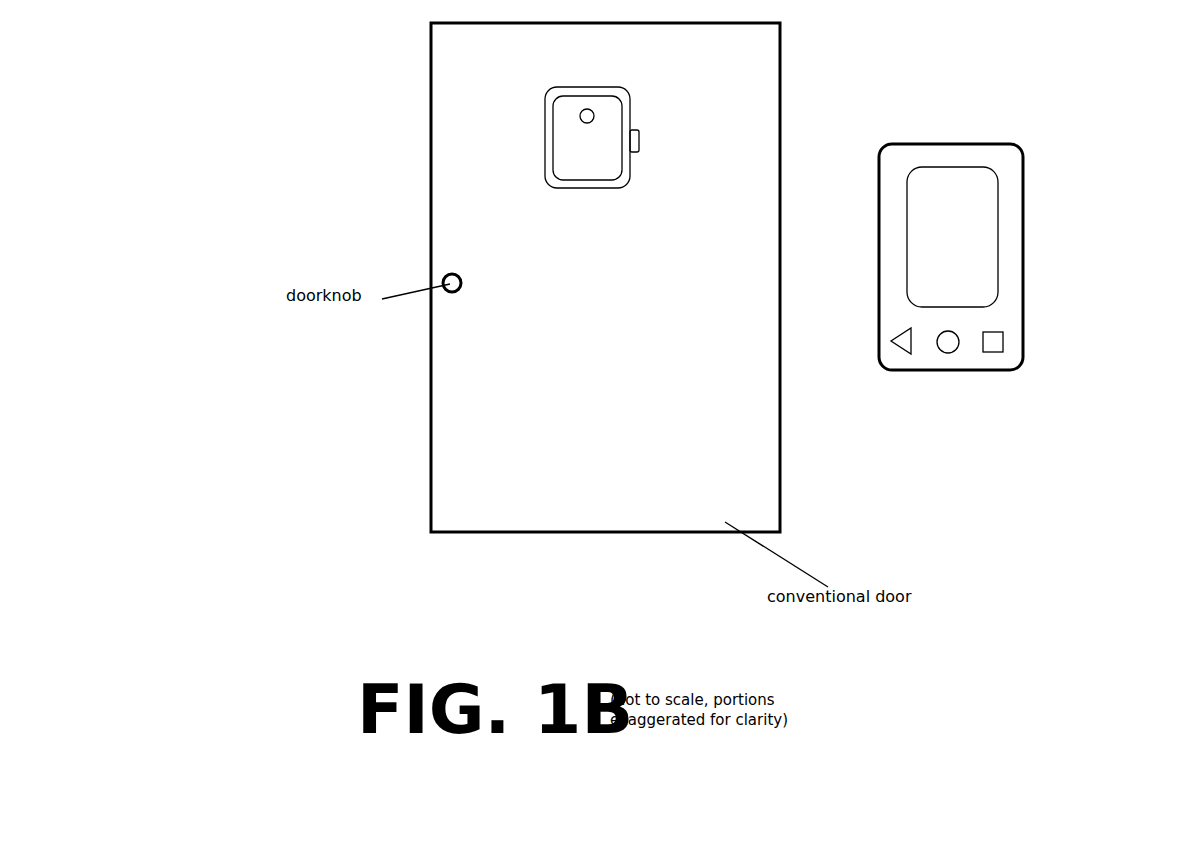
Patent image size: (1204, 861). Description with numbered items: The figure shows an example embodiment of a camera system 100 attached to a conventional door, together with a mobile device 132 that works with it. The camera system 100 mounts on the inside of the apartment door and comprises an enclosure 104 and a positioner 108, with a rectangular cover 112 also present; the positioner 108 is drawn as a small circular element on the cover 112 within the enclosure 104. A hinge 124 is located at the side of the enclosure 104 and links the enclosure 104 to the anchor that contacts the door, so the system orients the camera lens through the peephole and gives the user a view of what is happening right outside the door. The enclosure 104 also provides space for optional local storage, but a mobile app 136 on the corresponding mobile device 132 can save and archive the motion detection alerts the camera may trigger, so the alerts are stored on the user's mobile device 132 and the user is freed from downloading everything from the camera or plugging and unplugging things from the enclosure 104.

The camera system 100 is at (528, 324).
The enclosure 104 is at (595, 189).
The positioner 108 is at (592, 111).
The cover 112 is at (572, 152).
The hinge 124 is at (642, 138).
The mobile device 132 is at (1023, 256).
The mobile app 136 is at (948, 197).